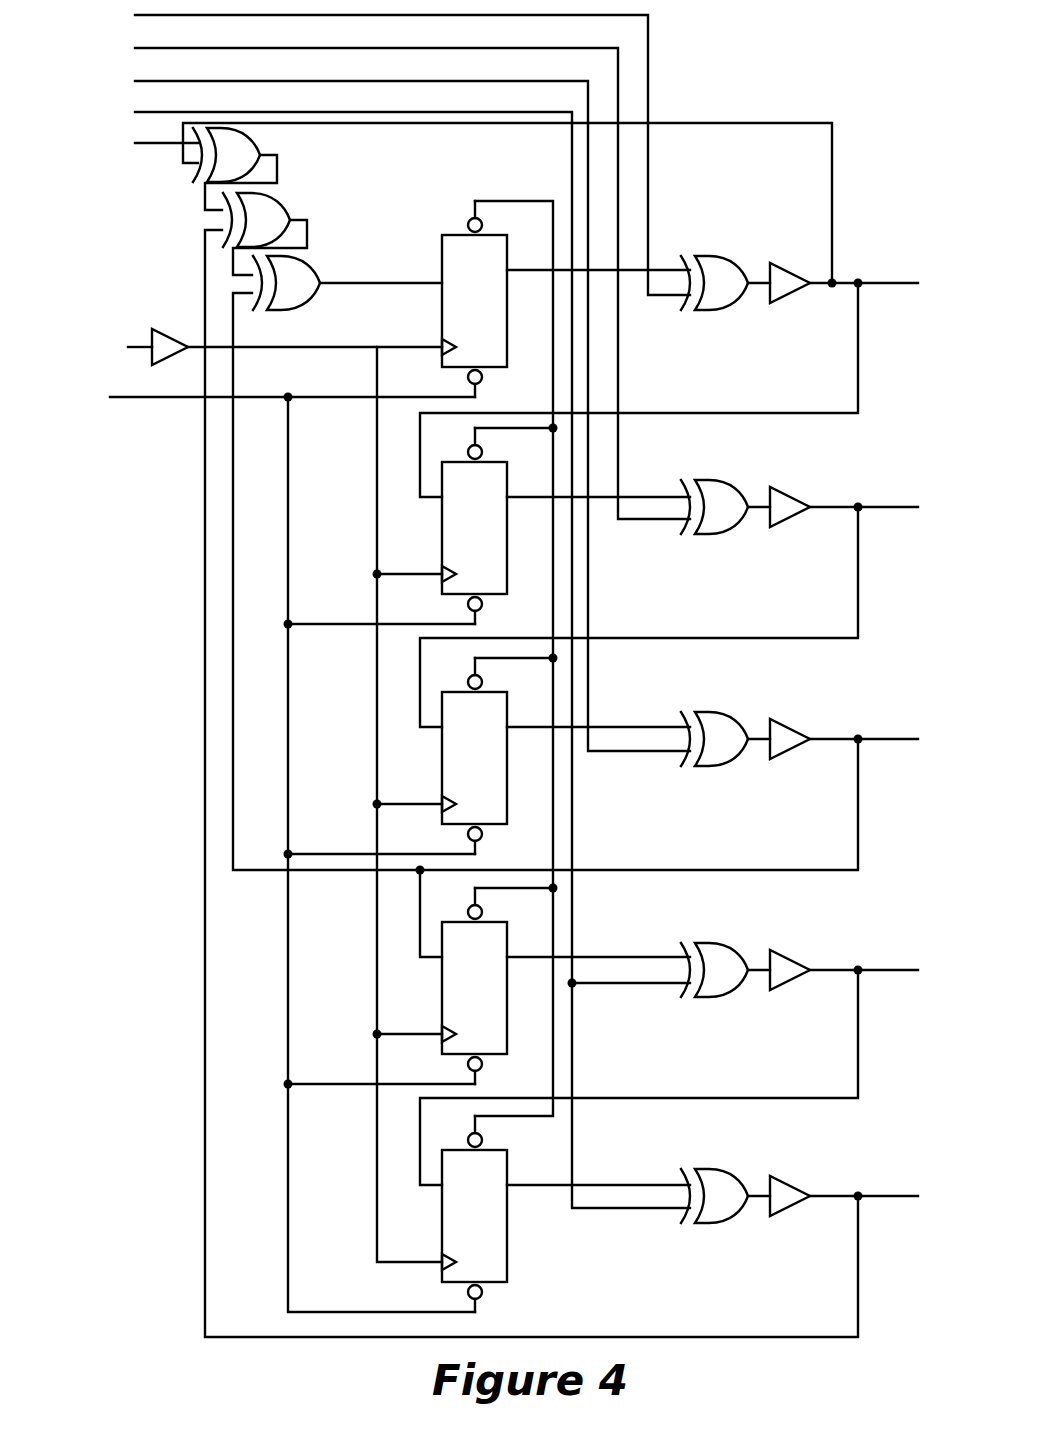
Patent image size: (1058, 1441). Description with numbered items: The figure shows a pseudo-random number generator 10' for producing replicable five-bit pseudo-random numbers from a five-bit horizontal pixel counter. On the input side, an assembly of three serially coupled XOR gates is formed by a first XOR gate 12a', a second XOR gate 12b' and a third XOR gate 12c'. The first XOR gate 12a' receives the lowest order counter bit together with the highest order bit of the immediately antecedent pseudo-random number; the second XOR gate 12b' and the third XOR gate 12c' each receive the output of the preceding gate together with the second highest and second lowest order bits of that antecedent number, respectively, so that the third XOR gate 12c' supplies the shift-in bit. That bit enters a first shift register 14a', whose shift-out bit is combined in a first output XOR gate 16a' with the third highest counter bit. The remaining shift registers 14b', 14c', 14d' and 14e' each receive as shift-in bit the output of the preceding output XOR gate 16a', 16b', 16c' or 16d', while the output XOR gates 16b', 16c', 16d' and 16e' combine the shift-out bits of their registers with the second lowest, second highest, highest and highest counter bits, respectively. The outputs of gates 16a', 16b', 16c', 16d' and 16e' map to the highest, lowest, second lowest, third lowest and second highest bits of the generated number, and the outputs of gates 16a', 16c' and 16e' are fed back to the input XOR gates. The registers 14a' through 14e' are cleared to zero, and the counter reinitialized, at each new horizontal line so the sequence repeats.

The pseudo-random number generator 10' is at (495, 671).
The first XOR gate 12a' is at (257, 155).
The second XOR gate 12b' is at (284, 218).
The third XOR gate 12c' is at (314, 281).
The first shift register 14a' is at (499, 299).
The second shift register 14b' is at (500, 526).
The third shift register 14c' is at (499, 756).
The fourth shift register 14d' is at (500, 986).
The fifth shift register 14e' is at (500, 1214).
The first XOR gate of shift register-XOR gate pair 16a' is at (730, 271).
The second XOR gate of shift register-XOR gate pair 16b' is at (730, 496).
The third XOR gate of shift register-XOR gate pair 16c' is at (729, 729).
The fourth XOR gate of shift register-XOR gate pair 16d' is at (733, 960).
The fifth XOR gate of shift register-XOR gate pair 16e' is at (733, 1188).